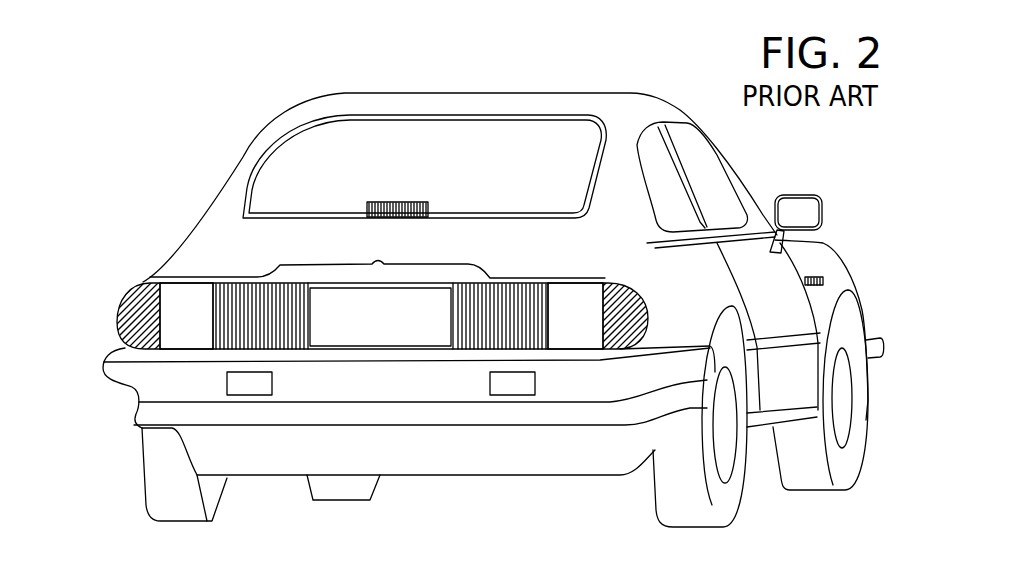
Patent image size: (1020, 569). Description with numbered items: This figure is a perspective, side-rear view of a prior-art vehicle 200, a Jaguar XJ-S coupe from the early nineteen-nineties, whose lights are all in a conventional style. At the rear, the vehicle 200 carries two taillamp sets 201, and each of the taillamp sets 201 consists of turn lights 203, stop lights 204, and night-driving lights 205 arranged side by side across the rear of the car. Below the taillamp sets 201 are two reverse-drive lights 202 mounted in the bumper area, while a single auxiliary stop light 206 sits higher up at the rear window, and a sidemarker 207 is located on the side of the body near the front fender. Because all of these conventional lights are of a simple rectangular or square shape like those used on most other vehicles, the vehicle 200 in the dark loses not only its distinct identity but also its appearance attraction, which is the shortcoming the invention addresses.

The vehicle 200 is at (200, 182).
The taillamp set 201 is at (647, 331).
The reverse-drive light 202 is at (250, 387).
The turn light 203 is at (136, 286).
The stop light 204 is at (172, 290).
The night-driving light 205 is at (262, 292).
The auxiliary stop light 206 is at (440, 216).
The sidemarker 207 is at (822, 279).